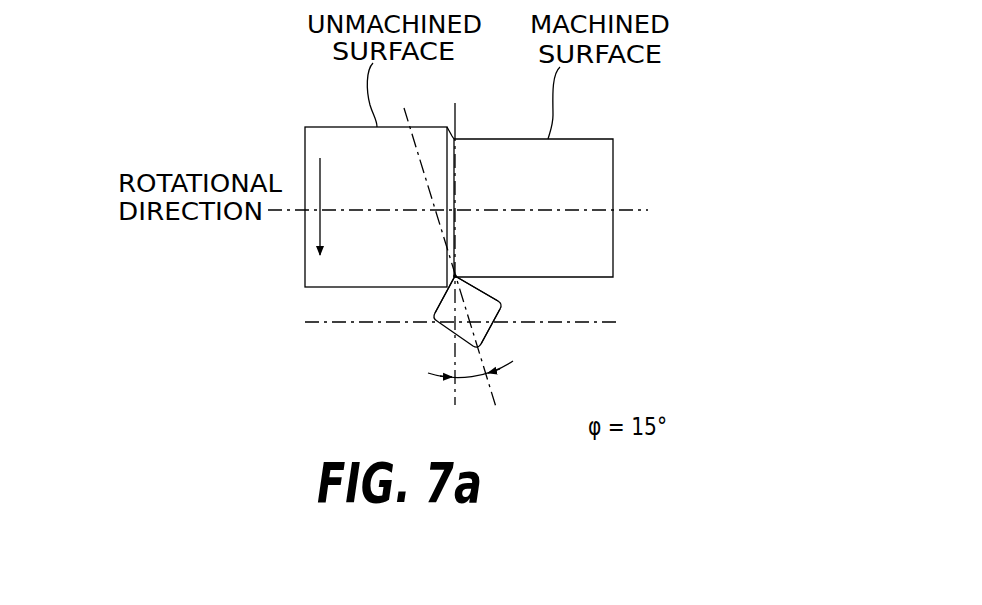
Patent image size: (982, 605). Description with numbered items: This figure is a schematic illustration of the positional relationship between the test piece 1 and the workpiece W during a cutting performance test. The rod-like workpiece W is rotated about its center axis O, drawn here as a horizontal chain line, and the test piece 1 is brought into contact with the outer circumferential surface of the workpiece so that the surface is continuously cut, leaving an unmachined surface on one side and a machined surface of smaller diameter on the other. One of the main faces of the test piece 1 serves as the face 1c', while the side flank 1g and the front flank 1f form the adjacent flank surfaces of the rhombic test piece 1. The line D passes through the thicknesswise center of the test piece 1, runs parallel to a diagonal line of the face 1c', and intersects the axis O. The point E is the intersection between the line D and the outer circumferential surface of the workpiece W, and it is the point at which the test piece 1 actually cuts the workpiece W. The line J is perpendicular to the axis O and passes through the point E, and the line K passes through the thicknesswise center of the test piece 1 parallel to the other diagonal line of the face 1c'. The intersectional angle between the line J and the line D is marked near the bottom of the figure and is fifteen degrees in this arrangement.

The test piece 1 is at (477, 342).
The front flank 1f is at (494, 297).
The side flank 1g is at (439, 306).
The face 1c' is at (530, 343).
The workpiece W is at (327, 127).
The line perpendicular to O and intersecting E J is at (452, 125).
The point of cutting E is at (455, 276).
The center axis of workpiece O is at (471, 209).
The line parallel to the other diagonal line of face 1c' K is at (474, 321).
The line parallel to diagonal line of face 1c' D is at (496, 401).